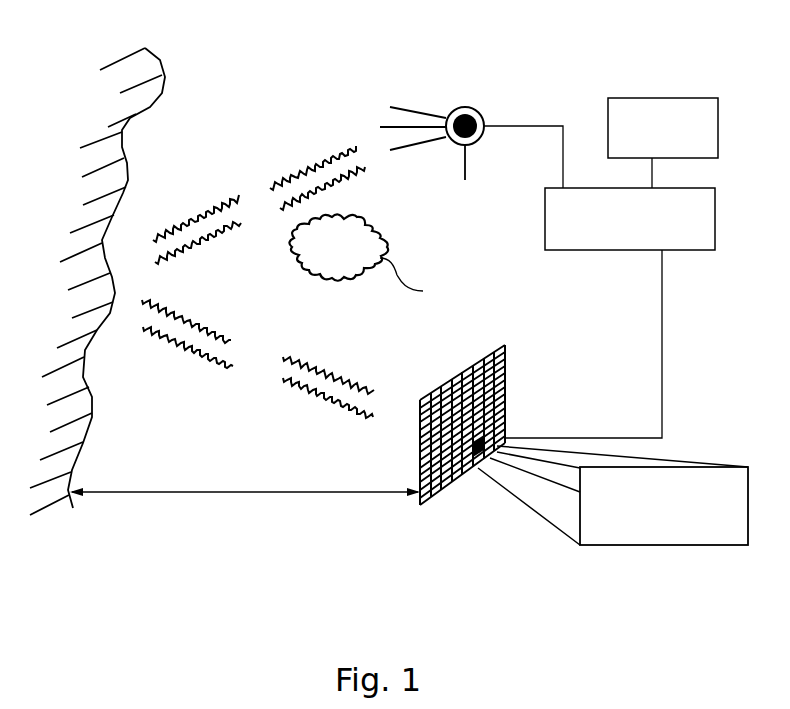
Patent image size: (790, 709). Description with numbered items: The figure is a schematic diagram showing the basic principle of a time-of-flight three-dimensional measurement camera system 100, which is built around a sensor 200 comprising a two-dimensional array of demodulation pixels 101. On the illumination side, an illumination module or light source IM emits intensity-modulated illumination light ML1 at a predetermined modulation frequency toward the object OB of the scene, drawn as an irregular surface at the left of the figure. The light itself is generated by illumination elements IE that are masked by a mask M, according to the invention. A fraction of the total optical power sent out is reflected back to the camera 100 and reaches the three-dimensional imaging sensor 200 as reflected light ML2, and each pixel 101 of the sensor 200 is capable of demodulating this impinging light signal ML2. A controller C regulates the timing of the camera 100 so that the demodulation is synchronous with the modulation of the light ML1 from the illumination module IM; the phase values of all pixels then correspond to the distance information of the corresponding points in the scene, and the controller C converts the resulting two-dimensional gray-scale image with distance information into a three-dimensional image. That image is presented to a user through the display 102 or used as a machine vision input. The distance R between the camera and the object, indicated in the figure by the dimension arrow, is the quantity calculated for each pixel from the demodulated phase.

The 3D-measurement camera system 100 is at (586, 67).
The demodulation pixel 101 is at (687, 547).
The display 102 is at (663, 128).
The sensor 200 is at (509, 342).
The object OB is at (128, 173).
The illumination light ML1 is at (318, 150).
The reflected light ML2 is at (338, 357).
The mask M is at (460, 107).
The illumination elements IE is at (477, 113).
The illumination module IM is at (433, 75).
The distance R is at (245, 505).
The controller C is at (630, 219).